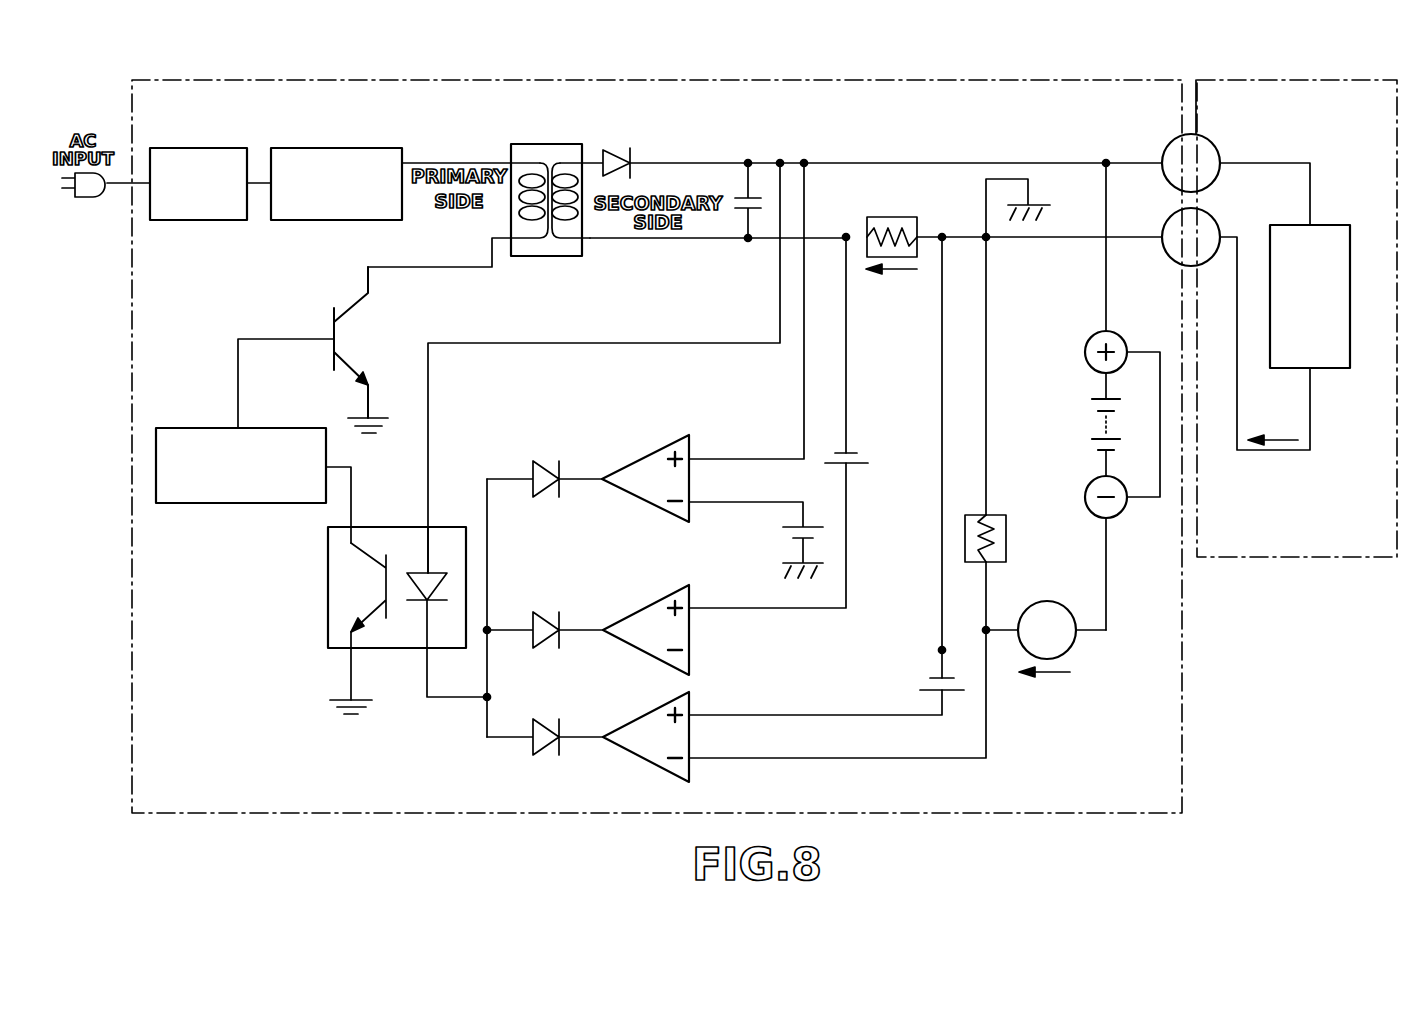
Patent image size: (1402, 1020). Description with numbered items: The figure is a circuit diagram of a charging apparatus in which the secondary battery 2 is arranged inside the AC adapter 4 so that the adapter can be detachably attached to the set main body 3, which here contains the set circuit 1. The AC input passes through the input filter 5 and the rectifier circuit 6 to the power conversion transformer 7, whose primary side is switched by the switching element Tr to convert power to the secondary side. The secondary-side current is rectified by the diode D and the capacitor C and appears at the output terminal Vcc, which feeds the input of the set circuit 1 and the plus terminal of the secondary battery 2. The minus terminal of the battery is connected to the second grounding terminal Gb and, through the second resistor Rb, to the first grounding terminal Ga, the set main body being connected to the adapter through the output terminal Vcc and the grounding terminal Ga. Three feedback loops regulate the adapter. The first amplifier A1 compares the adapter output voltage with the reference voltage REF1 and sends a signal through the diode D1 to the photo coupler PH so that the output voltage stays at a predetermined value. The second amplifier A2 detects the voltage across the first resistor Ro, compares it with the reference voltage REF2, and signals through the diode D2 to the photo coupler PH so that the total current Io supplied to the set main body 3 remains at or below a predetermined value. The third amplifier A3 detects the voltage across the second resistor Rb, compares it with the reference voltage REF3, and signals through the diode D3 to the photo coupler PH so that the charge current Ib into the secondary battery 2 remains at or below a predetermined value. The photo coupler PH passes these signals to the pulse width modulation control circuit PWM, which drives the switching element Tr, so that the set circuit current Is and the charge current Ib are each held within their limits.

The set circuit 1 is at (1335, 368).
The secondary battery 2 is at (1150, 497).
The set main body 3 is at (1323, 80).
The AC adapter 4 is at (772, 80).
The input filter 5 is at (200, 148).
The rectifier circuit 6 is at (318, 148).
The power conversion transformer 7 is at (540, 144).
The diode D is at (617, 146).
The capacitor C is at (750, 196).
The first resistor Ro is at (887, 216).
The second resistor Rb is at (1006, 538).
The switching element Tr is at (348, 358).
The photo coupler PH is at (400, 527).
The pulse width modulation control circuit PWM is at (235, 503).
The first amplifier A1 is at (642, 478).
The second amplifier A2 is at (642, 628).
The third amplifier A3 is at (642, 735).
The diode D1 is at (545, 470).
The diode D2 is at (545, 625).
The diode D3 is at (545, 733).
The reference voltage REF1 is at (787, 533).
The reference voltage REF2 is at (862, 457).
The reference voltage REF3 is at (925, 683).
The output terminal Vcc is at (1191, 163).
The first grounding terminal Ga is at (1191, 237).
The second grounding terminal Gb is at (1046, 661).